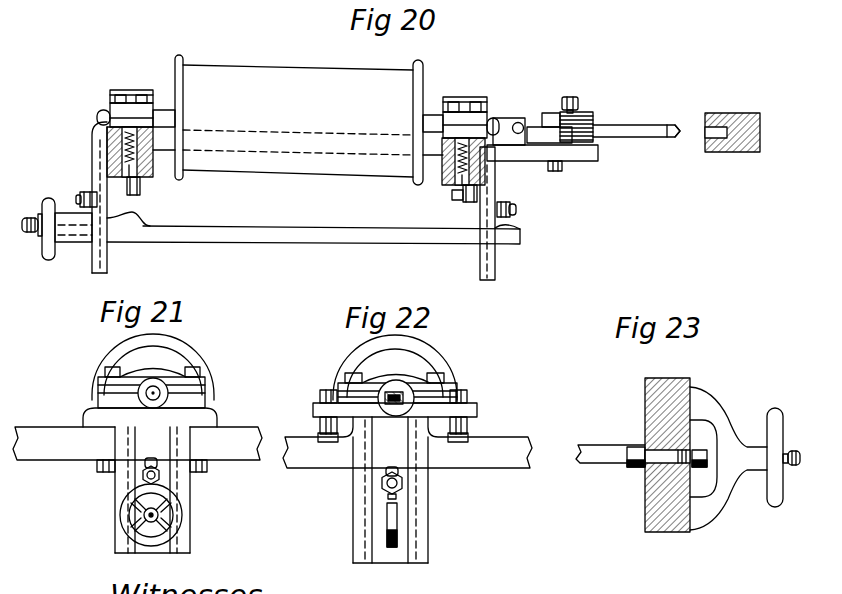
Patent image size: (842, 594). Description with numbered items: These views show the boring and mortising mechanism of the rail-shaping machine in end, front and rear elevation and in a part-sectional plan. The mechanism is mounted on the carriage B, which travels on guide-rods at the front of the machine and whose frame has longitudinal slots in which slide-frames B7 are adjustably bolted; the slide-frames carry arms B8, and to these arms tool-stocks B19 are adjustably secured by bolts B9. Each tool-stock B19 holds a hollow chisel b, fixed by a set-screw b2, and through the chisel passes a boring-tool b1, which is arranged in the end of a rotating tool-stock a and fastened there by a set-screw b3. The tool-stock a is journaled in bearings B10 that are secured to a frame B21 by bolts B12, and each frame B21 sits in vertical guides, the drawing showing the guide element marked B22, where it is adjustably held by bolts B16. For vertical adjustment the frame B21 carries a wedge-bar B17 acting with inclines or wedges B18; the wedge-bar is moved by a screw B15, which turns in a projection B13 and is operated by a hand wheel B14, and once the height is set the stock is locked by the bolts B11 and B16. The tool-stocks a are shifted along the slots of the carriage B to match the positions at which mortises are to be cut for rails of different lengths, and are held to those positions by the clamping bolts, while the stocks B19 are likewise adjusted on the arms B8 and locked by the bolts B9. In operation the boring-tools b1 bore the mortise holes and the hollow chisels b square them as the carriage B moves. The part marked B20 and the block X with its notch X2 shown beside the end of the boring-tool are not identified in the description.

In FIG. 20, the tool-stock a is at (299, 120).
In FIG. 21, the tool-stock a is at (203, 363).
In FIG. 22, the tool-stock a is at (437, 371).
In FIG. 20, the carriage B is at (442, 178).
In FIG. 21, the carriage B is at (32, 430).
In FIG. 22, the carriage B is at (505, 438).
In FIG. 20, the slide-frame B7 is at (293, 201).
In FIG. 21, the slide-frame B7 is at (217, 418).
In FIG. 22, the slide-frame B7 is at (390, 490).
In FIG. 23, the slide-frame B7 is at (692, 387).
In FIG. 20, the arm B8 is at (508, 155).
In FIG. 22, the arm B8 is at (471, 429).
In FIG. 20, the bolt B9 is at (560, 172).
In FIG. 22, the bolt B9 is at (320, 394).
In FIG. 20, the bearing B10 is at (130, 92).
In FIG. 21, the bearing B10 is at (146, 370).
In FIG. 22, the bearing B10 is at (394, 375).
In FIG. 20, the bolt B11 is at (141, 188).
In FIG. 21, the bolt B11 is at (96, 467).
In FIG. 20, the bolt B12 is at (110, 98).
In FIG. 21, the bolt B12 is at (106, 368).
In FIG. 22, the bolt B12 is at (350, 371).
In FIG. 20, the projection B13 is at (80, 238).
In FIG. 23, the projection B13 is at (713, 408).
In FIG. 20, the wheel B14 is at (50, 212).
In FIG. 21, the wheel B14 is at (124, 517).
In FIG. 23, the wheel B14 is at (777, 418).
In FIG. 20, the screw B15 is at (33, 219).
In FIG. 21, the screw B15 is at (157, 513).
In FIG. 23, the screw B15 is at (794, 452).
In FIG. 20, the bolt B16 is at (510, 204).
In FIG. 21, the bolt B16 is at (140, 477).
In FIG. 22, the bolt B16 is at (381, 481).
In FIG. 23, the bolt B16 is at (635, 469).
In FIG. 20, the wedge-bar B17 is at (288, 233).
In FIG. 23, the wedge-bar B17 is at (600, 445).
In FIG. 20, the incline or wedge B18 is at (104, 223).
In FIG. 22, the incline or wedge B18 is at (398, 517).
In FIG. 22, the tool-stock B19 is at (474, 407).
In FIG. 22, the slot end B20 is at (385, 537).
In FIG. 21, the frame B21 is at (154, 459).
In FIG. 22, the frame B21 is at (396, 446).
In FIG. 23, the frame B21 is at (691, 483).
In FIG. 22, the column B22 is at (427, 489).
In FIG. 20, the hollow chisel b is at (620, 128).
In FIG. 22, the hollow chisel b is at (387, 392).
In FIG. 20, the boring-tool b1 is at (674, 132).
In FIG. 22, the boring-tool b1 is at (403, 396).
In FIG. 20, the set-screw b2 is at (578, 104).
In FIG. 20, the set-screw b3 is at (521, 122).
In FIG. 20, the block X is at (732, 124).
In FIG. 20, the notch X2 is at (710, 138).